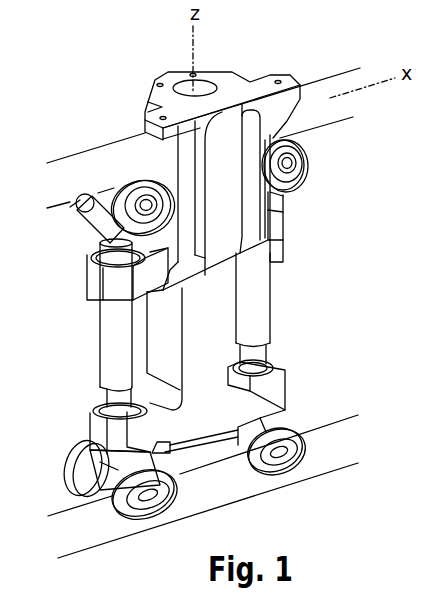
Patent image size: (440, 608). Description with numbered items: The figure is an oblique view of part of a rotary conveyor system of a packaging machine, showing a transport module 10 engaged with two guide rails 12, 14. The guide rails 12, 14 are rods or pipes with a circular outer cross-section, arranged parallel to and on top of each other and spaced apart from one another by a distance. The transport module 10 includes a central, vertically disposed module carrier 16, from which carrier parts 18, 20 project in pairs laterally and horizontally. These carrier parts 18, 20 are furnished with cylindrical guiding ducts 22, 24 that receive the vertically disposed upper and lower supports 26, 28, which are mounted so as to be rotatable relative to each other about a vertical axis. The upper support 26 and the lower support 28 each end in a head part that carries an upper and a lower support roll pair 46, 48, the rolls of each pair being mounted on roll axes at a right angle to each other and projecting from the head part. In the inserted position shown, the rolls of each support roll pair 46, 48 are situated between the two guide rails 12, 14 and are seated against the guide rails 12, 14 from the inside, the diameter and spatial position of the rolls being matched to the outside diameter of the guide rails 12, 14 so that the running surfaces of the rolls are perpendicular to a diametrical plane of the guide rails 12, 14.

The transport module 10 is at (91, 86).
The guide rail 12 is at (335, 117).
The guide rail 14 is at (322, 470).
The module carrier 16 is at (212, 309).
The carrier part 18 is at (272, 242).
The carrier part 20 is at (265, 393).
The guiding duct 22 is at (90, 255).
The guiding duct 24 is at (100, 413).
The upper support 26 is at (118, 324).
The lower support 28 is at (113, 397).
The upper support roll pair 46 is at (135, 192).
The lower support roll pair 48 is at (122, 498).